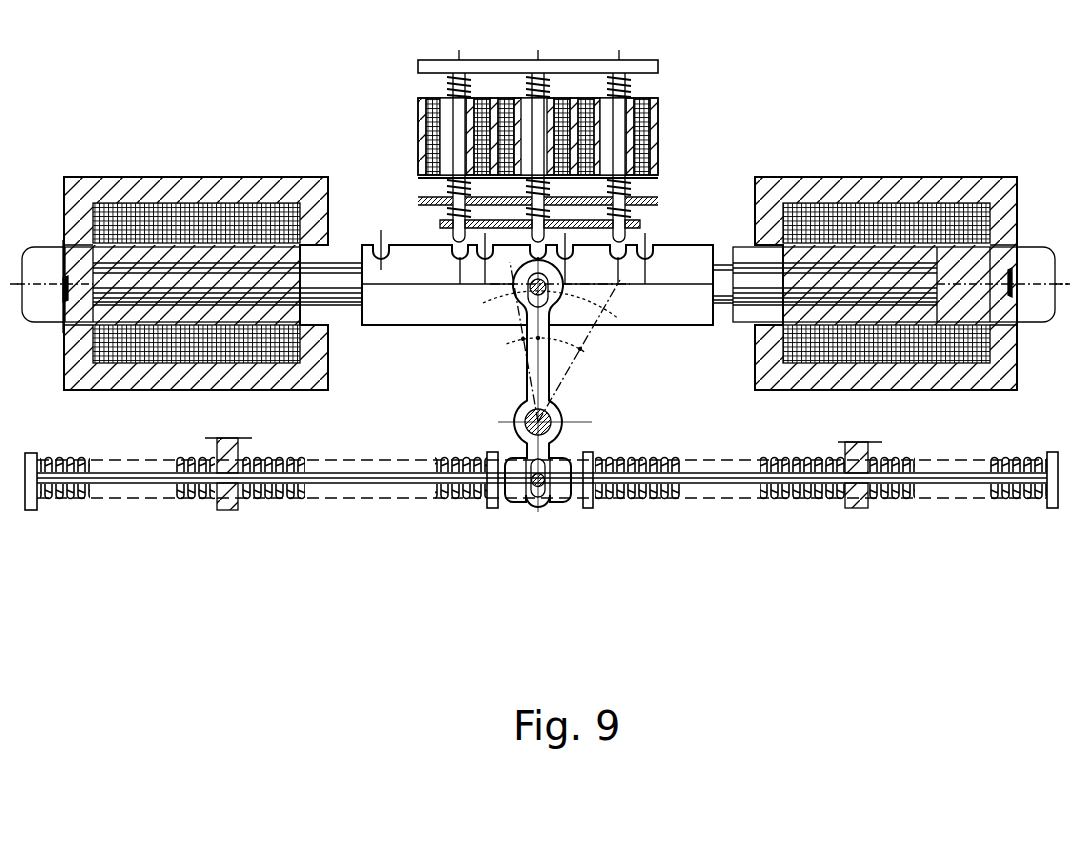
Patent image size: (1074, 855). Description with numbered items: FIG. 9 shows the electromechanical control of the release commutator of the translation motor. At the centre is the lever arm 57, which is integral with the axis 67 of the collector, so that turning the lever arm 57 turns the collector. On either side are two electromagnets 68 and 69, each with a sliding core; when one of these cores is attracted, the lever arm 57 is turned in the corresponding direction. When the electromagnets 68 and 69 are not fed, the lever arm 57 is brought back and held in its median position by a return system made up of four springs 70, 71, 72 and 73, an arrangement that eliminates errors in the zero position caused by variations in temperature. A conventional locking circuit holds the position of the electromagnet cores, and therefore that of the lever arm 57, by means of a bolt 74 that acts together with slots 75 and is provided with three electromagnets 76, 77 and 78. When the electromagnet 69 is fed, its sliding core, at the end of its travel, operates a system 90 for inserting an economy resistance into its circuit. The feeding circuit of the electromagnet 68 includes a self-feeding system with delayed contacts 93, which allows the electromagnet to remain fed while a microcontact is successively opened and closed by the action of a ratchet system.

The lever arm 57 is at (560, 365).
The axis of the collector 67 is at (555, 427).
The electromagnet 68 is at (93, 185).
The electromagnet 69 is at (990, 185).
The spring 70 is at (898, 500).
The spring 71 is at (632, 502).
The spring 72 is at (262, 502).
The spring 73 is at (80, 502).
The bolt 74 is at (418, 118).
The slots 75 is at (385, 246).
The electromagnet 76 is at (456, 125).
The electromagnet 77 is at (535, 128).
The electromagnet 78 is at (616, 120).
The system for insertion of an economy resistance 90 is at (1013, 280).
The delayed contacts 93 is at (64, 284).